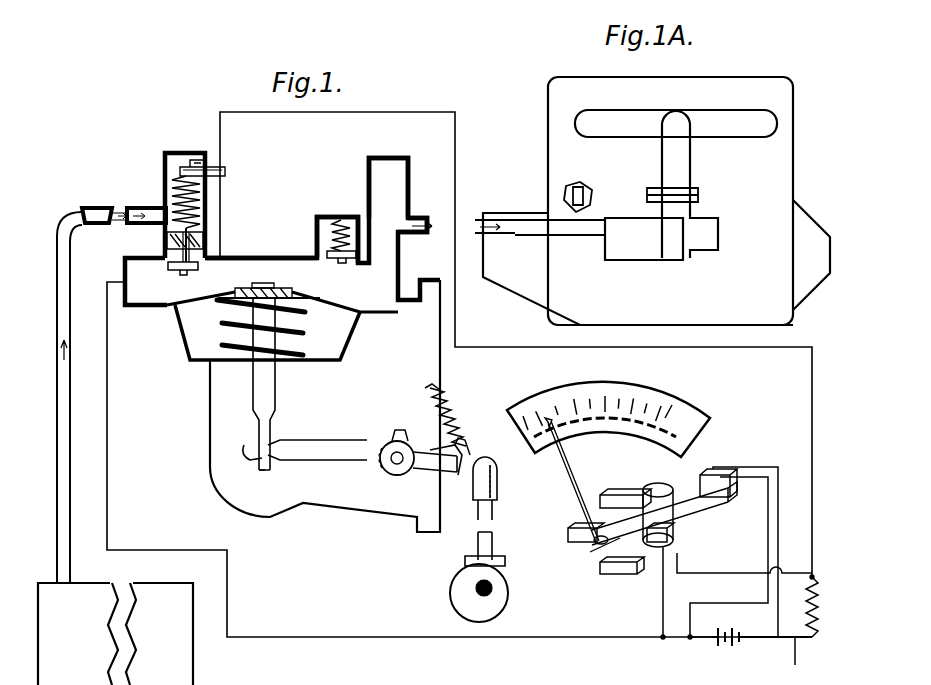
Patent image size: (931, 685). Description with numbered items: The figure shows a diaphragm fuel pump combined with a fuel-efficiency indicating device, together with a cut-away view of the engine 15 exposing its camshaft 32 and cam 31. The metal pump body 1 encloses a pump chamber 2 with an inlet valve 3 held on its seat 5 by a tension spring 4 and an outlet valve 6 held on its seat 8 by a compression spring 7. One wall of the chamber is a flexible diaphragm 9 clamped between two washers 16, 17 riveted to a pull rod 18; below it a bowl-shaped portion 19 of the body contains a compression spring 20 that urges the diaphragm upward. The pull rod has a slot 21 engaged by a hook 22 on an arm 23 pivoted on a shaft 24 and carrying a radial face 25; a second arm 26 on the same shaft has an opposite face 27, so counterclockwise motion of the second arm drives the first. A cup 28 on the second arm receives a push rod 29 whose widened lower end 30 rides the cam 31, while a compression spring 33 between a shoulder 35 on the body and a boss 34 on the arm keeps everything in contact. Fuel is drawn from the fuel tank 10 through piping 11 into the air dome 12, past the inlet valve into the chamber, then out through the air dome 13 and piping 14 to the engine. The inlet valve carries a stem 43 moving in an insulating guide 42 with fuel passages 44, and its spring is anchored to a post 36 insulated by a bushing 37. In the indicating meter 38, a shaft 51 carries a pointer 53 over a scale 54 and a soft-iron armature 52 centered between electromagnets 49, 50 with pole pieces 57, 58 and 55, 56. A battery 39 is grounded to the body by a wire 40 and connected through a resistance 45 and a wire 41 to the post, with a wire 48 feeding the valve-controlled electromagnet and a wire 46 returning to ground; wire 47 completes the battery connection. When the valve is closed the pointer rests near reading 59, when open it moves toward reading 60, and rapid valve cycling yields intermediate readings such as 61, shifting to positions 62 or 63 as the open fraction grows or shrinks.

In FIG. 1, the pump body 1 is at (125, 262).
In FIG. 1, the pump chamber 2 is at (250, 264).
In FIG. 1, the inlet valve 3 is at (175, 270).
In FIG. 1, the tension spring 4 is at (200, 205).
In FIG. 1, the seat 5 is at (198, 256).
In FIG. 1, the outlet valve 6 is at (330, 236).
In FIG. 1, the compression spring 7 is at (341, 222).
In FIG. 1, the seat 8 is at (348, 262).
In FIG. 1, the flexible diaphragm 9 is at (195, 308).
In FIG. 1, the fuel tank 10 is at (115, 634).
In FIG. 1, the piping 11 is at (96, 212).
In FIG. 1, the air dome 12 is at (163, 160).
In FIG. 1, the air dome 13 is at (390, 158).
In FIG. 1, the piping 14 is at (415, 218).
In FIG. 1A, the piping 14 is at (512, 236).
In FIG. 1A, the engine 15 is at (632, 92).
In FIG. 1, the washer 16 is at (286, 290).
In FIG. 1, the washer 17 is at (305, 308).
In FIG. 1, the pull rod 18 is at (280, 384).
In FIG. 1, the bowl-shaped portion 19 is at (200, 345).
In FIG. 1, the compression spring 20 is at (310, 336).
In FIG. 1, the slot 21 is at (252, 438).
In FIG. 1, the hook 22 is at (245, 455).
In FIG. 1, the arm 23 is at (322, 460).
In FIG. 1, the shaft 24 is at (392, 476).
In FIG. 1, the face 25 is at (390, 440).
In FIG. 1, the second arm 26 is at (440, 466).
In FIG. 1, the face 27 is at (404, 430).
In FIG. 1, the cup 28 is at (488, 476).
In FIG. 1, the push rod 29 is at (480, 525).
In FIG. 1, the widened lower end 30 is at (465, 561).
In FIG. 1, the cam 31 is at (450, 593).
In FIG. 1A, the cam 31 is at (585, 185).
In FIG. 1, the camshaft 32 is at (492, 594).
In FIG. 1A, the camshaft 32 is at (594, 192).
In FIG. 1, the compression spring 33 is at (445, 410).
In FIG. 1, the boss 34 is at (465, 462).
In FIG. 1, the shoulder 35 is at (430, 386).
In FIG. 1, the post 36 is at (197, 162).
In FIG. 1, the bushing 37 is at (226, 174).
In FIG. 1, the indicating meter 38 is at (630, 411).
In FIG. 1, the battery 39 is at (728, 650).
In FIG. 1, the wire 40 is at (108, 436).
In FIG. 1, the wire 41 is at (316, 112).
In FIG. 1, the insulating guide 42 is at (203, 236).
In FIG. 1, the stem 43 is at (166, 250).
In FIG. 1, the fuel passages 44 is at (204, 242).
In FIG. 1, the resistance 45 is at (808, 610).
In FIG. 1, the wire 46 is at (662, 603).
In FIG. 1, the wire 47 is at (794, 628).
In FIG. 1, the wire 48 is at (735, 576).
In FIG. 1, the electromagnet 49 is at (680, 512).
In FIG. 1, the electromagnet 50 is at (712, 490).
In FIG. 1, the shaft 51 is at (598, 556).
In FIG. 1, the armature 52 is at (590, 515).
In FIG. 1, the pointer 53 is at (568, 462).
In FIG. 1, the scale 54 is at (695, 420).
In FIG. 1, the pole piece 55 is at (568, 540).
In FIG. 1, the pole piece 56 is at (670, 540).
In FIG. 1, the pole piece 57 is at (608, 495).
In FIG. 1, the pole piece 58 is at (610, 578).
In FIG. 1, the reading 59 is at (533, 410).
In FIG. 1, the reading 60 is at (670, 408).
In FIG. 1, the reading 61 is at (610, 396).
In FIG. 1, the position 62 is at (636, 398).
In FIG. 1, the position 63 is at (575, 398).